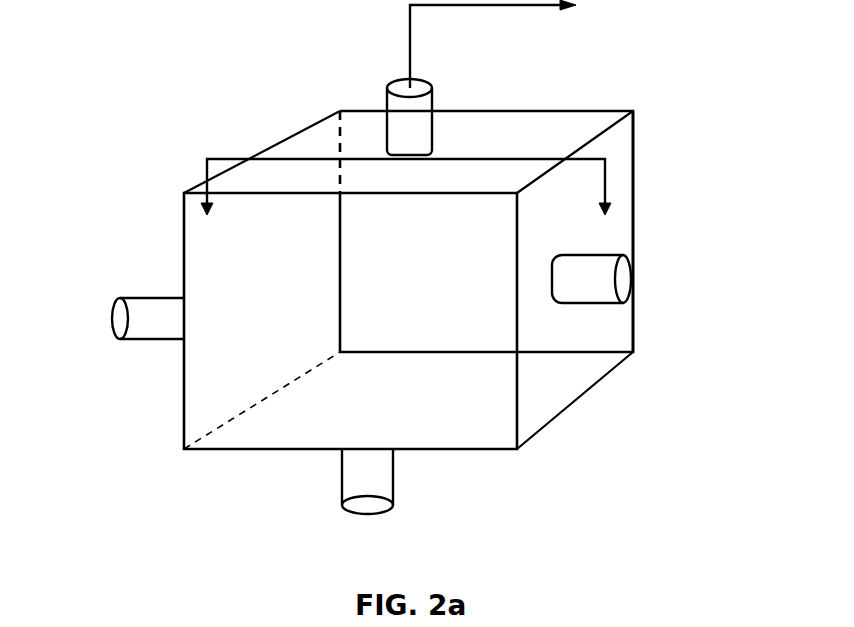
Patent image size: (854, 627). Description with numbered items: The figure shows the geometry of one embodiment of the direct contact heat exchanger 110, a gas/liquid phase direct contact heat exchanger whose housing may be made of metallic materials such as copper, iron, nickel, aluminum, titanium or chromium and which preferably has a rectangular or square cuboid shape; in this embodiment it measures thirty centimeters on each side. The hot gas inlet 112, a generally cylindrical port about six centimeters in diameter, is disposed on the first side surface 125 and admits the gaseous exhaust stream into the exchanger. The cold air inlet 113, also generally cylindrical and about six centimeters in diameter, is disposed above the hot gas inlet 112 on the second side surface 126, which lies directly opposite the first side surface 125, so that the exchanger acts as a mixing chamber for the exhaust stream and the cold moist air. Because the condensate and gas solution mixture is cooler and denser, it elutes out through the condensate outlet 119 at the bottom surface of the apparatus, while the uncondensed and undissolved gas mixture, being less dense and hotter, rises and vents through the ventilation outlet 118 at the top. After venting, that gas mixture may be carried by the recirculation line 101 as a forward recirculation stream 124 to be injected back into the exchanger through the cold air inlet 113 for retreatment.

The recirculation line 101 is at (406, 16).
The direct contact heat exchanger 110 is at (551, 121).
The hot gas inlet 112 is at (140, 306).
The cold air inlet 113 is at (636, 250).
The ventilation outlet 118 is at (432, 100).
The condensate outlet 119 is at (383, 484).
The forward recirculation stream 124 is at (533, 7).
The first side surface 125 is at (182, 212).
The second side surface 126 is at (612, 151).